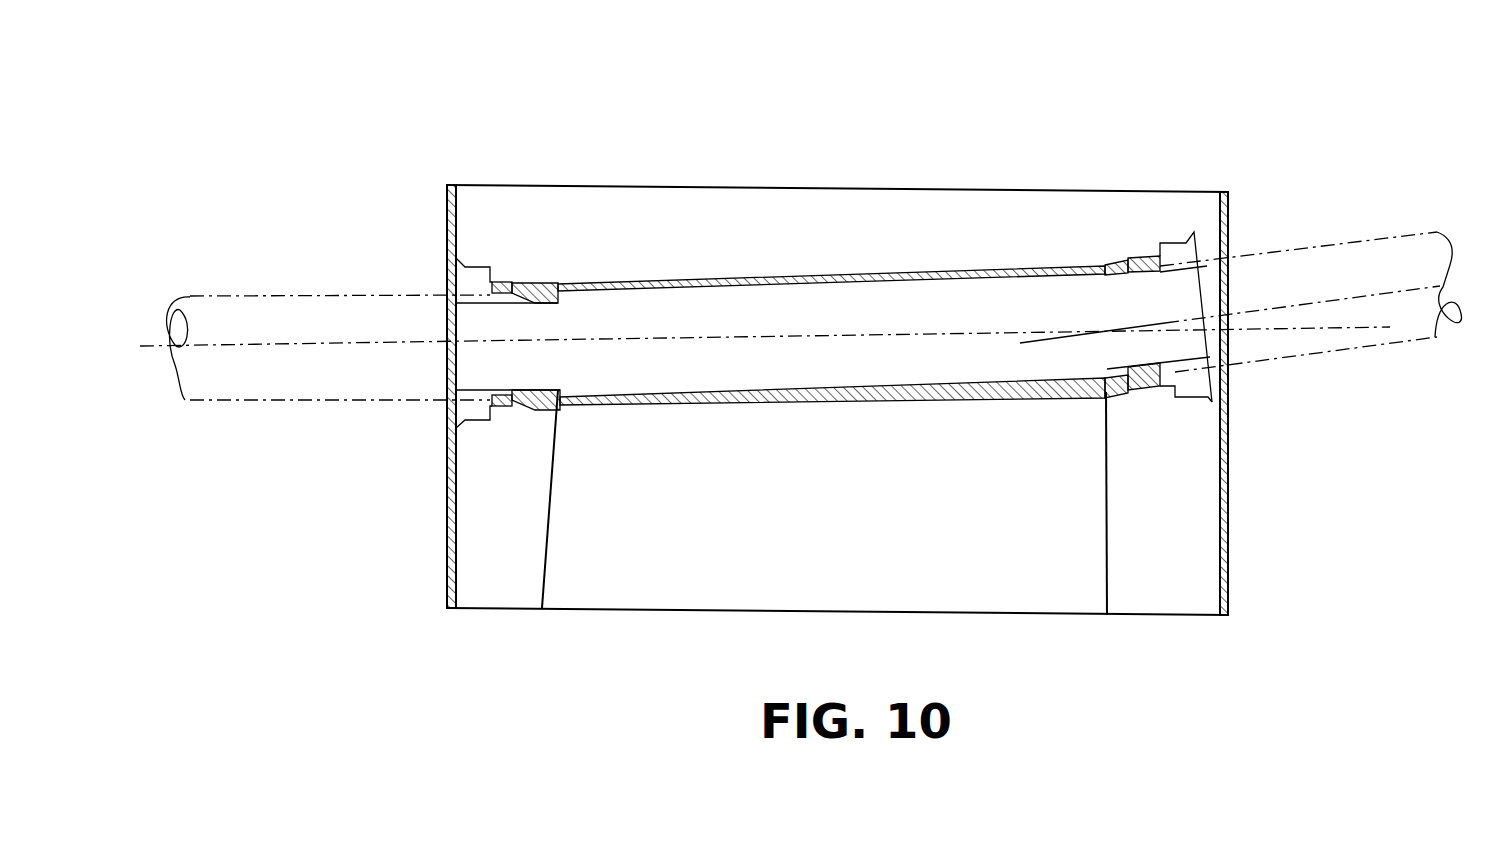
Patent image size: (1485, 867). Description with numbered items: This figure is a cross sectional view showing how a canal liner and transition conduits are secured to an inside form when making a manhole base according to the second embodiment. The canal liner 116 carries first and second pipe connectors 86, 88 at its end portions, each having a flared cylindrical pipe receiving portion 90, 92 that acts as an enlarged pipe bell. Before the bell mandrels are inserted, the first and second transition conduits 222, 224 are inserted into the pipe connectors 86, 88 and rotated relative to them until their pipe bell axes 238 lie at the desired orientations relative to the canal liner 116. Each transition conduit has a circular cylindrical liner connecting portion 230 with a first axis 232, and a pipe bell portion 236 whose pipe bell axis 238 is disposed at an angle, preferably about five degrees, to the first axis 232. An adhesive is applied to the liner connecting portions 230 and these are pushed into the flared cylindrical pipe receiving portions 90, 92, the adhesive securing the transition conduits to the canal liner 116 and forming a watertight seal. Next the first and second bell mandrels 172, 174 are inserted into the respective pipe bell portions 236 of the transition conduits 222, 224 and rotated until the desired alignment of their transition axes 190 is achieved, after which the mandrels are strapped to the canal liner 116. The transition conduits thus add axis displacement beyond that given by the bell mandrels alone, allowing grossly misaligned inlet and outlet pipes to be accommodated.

The first pipe connector 86 is at (1115, 267).
The second pipe connector 88 is at (545, 283).
The flared cylindrical pipe receiving portion 90 is at (1116, 385).
The flared cylindrical pipe receiving portion 92 is at (542, 405).
The canal form and liner 116 is at (725, 280).
The first bell mandrel 172 is at (1174, 243).
The second bell mandrel 174 is at (464, 258).
The transition axis 190 is at (377, 343).
The first transition conduit 222 is at (1140, 258).
The second transition conduit 224 is at (512, 280).
The liner connecting portion 230 is at (1130, 382).
The first axis 232 is at (595, 342).
The pipe bell portion 236 is at (508, 414).
The pipe bell axis 238 is at (330, 338).